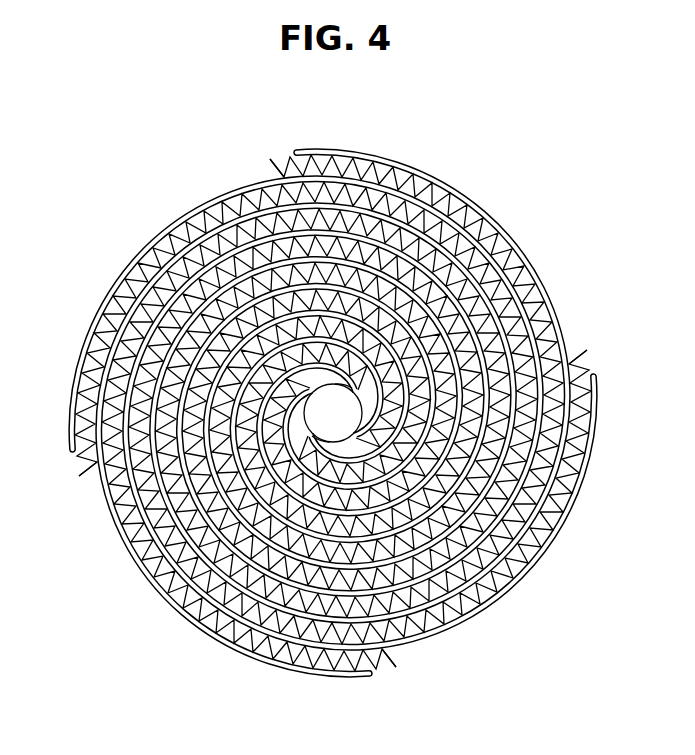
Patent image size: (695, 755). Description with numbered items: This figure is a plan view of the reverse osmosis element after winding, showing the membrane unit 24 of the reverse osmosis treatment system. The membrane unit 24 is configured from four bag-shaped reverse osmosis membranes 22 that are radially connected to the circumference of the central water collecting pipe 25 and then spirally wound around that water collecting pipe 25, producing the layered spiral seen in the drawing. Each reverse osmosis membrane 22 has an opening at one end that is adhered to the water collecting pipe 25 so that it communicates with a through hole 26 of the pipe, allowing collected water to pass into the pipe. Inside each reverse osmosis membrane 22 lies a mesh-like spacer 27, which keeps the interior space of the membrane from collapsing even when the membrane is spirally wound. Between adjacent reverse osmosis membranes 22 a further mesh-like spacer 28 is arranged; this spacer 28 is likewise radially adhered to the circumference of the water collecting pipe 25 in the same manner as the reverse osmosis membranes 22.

The reverse osmosis membrane 22 is at (376, 148).
The membrane unit 24 is at (465, 174).
The water collecting pipe 25 is at (250, 548).
The through hole 26 is at (292, 388).
The spacer 27 is at (312, 148).
The spacer 28 is at (282, 164).